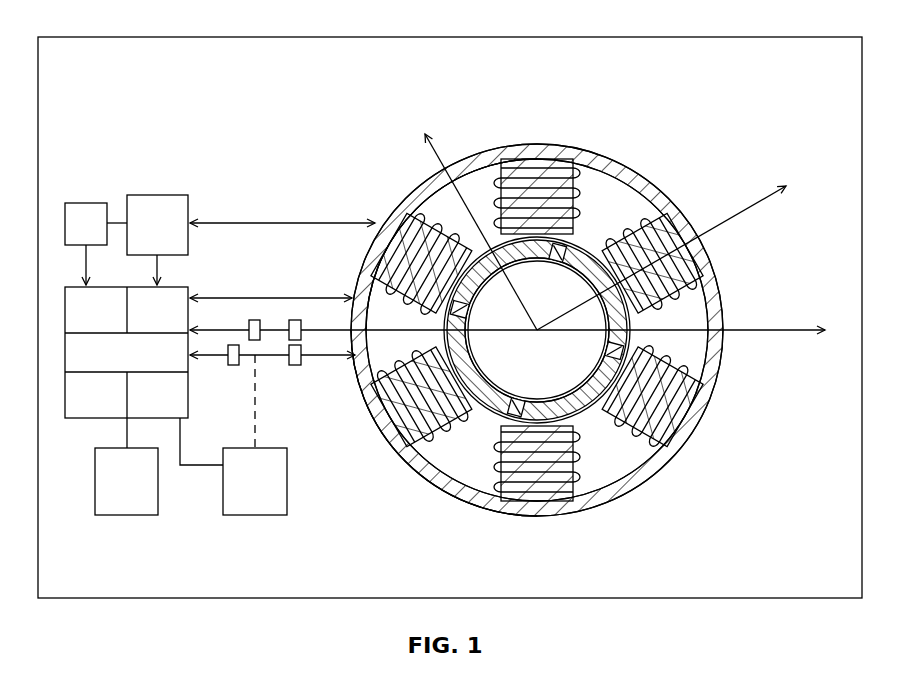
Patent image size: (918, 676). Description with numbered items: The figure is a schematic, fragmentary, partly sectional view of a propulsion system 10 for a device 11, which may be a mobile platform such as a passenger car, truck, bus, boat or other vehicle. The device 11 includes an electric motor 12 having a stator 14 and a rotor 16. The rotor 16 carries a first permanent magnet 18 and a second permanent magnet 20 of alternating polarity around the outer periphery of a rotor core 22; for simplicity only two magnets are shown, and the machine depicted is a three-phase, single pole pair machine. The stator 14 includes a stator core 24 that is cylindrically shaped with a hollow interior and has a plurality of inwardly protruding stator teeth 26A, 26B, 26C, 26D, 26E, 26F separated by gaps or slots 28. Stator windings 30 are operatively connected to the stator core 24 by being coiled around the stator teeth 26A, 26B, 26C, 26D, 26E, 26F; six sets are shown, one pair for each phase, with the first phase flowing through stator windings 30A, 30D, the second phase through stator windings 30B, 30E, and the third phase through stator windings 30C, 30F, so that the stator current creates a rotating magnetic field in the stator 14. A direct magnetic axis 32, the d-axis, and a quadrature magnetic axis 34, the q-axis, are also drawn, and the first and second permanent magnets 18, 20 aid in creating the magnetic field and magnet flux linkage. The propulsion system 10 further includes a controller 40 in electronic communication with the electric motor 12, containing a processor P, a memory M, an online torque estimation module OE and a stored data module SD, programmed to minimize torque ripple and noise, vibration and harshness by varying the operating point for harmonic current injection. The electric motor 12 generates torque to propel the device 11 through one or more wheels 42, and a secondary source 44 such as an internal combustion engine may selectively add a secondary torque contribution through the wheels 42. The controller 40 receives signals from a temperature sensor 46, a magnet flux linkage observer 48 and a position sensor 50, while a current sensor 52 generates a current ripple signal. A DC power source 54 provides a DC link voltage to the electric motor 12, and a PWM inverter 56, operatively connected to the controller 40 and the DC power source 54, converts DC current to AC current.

The propulsion system 10 is at (182, 92).
The device 11 is at (90, 37).
The electric motor 12 is at (729, 132).
The stator 14 is at (580, 525).
The rotor 16 is at (595, 433).
The first permanent magnet 18 is at (492, 382).
The second permanent magnet 20 is at (558, 262).
The rotor core 22 is at (477, 316).
The stator core 24 is at (468, 500).
The stator tooth 26A is at (578, 195).
The stator tooth 26B is at (708, 316).
The stator tooth 26C is at (708, 345).
The stator tooth 26D is at (575, 480).
The stator tooth 26E is at (413, 456).
The stator tooth 26F is at (440, 263).
The slots 28 is at (473, 157).
The stator windings 30 is at (527, 158).
The stator winding 30A is at (545, 167).
The stator winding 30B is at (683, 290).
The stator winding 30C is at (675, 403).
The stator winding 30D is at (514, 514).
The stator winding 30E is at (400, 403).
The stator winding 30F is at (392, 235).
The direct magnetic axis 32 is at (437, 160).
The quadrature magnetic axis 34 is at (750, 197).
The controller 40 is at (83, 420).
The wheels 42 is at (257, 515).
The secondary source 44 is at (128, 515).
The temperature sensor 46 is at (293, 367).
The magnet flux linkage observer 48 is at (255, 320).
The position sensor 50 is at (295, 320).
The current sensor 52 is at (233, 367).
The DC power source 54 is at (86, 203).
The PWM inverter 56 is at (160, 195).